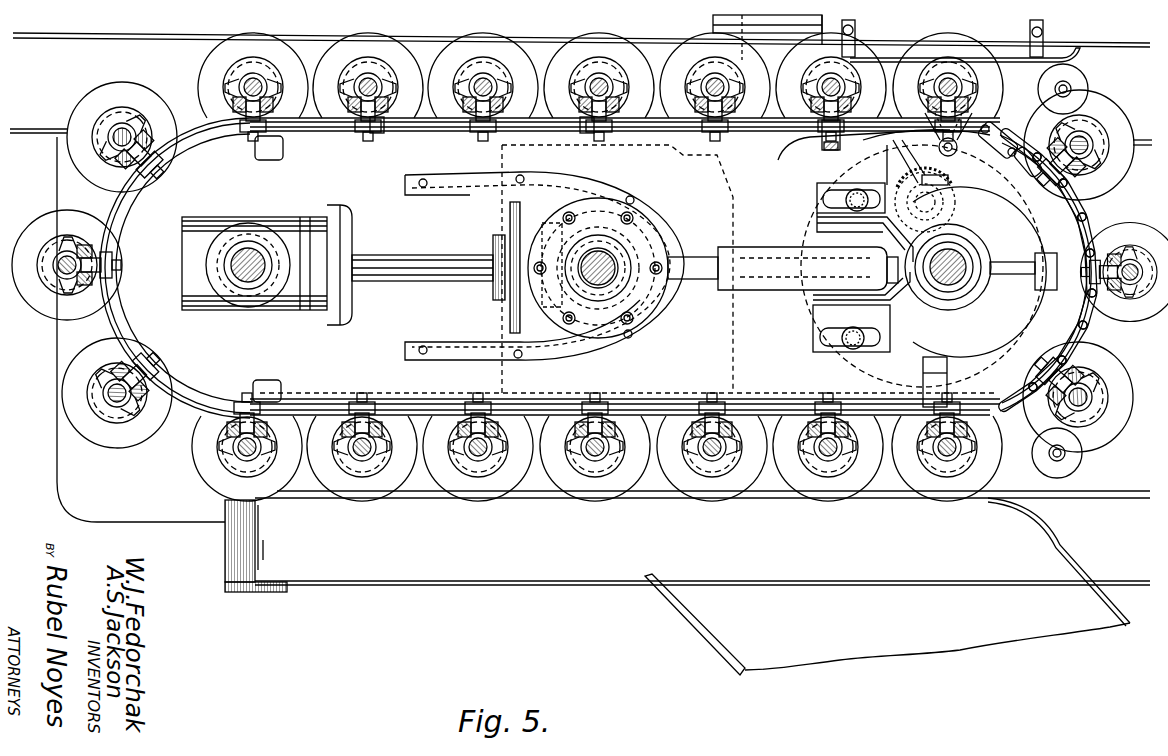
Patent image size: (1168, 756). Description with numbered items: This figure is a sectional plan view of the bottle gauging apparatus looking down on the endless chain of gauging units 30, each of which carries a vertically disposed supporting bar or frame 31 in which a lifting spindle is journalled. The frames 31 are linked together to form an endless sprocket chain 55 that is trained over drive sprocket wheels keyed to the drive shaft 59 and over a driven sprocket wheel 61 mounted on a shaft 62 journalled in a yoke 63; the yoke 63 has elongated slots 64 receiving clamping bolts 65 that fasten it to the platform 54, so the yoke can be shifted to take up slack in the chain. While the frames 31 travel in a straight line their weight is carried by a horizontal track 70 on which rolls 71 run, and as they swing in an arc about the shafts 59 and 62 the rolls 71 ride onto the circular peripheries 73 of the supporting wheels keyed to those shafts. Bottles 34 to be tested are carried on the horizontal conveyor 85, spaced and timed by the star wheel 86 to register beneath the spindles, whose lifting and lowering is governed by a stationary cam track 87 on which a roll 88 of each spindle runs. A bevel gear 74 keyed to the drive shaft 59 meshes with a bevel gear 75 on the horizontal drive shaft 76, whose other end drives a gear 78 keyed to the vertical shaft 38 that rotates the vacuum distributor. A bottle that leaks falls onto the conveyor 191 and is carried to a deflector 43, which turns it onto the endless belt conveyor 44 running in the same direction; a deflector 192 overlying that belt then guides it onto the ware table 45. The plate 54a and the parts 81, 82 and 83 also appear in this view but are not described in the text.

The gauging unit 30 is at (990, 480).
The supporting bar or frame 31 is at (830, 95).
The bottle 34 is at (1086, 80).
The shaft 38 is at (622, 278).
The deflector 43 is at (650, 478).
The endless belt conveyor 44 is at (612, 580).
The ware table 45 is at (785, 660).
The platform 54 is at (866, 295).
The mounting plate 54a is at (480, 185).
The endless sprocket chain 55 is at (1093, 212).
The drive shaft 59 is at (250, 250).
The driven sprocket wheel 61 is at (1000, 130).
The shaft 62 is at (967, 262).
The yoke 63 is at (1010, 324).
The elongated slot 64 is at (822, 343).
The clamping bolt 65 is at (866, 340).
The horizontal track 70 is at (815, 140).
The roll 71 is at (822, 125).
The periphery 73 is at (940, 135).
The bevel gear 74 is at (254, 276).
The bevel gear 75 is at (310, 270).
The horizontal drive shaft 76 is at (432, 257).
The gear 78 is at (668, 236).
The bearing 81 is at (608, 287).
The shaft 82 is at (720, 256).
The pinion 83 is at (524, 269).
The horizontal conveyor 85 is at (193, 52).
The star wheel 86 is at (952, 164).
The stationary track 87 is at (440, 120).
The roll 88 is at (377, 133).
The conveyor 191 is at (1100, 500).
The deflector 192 is at (1052, 532).